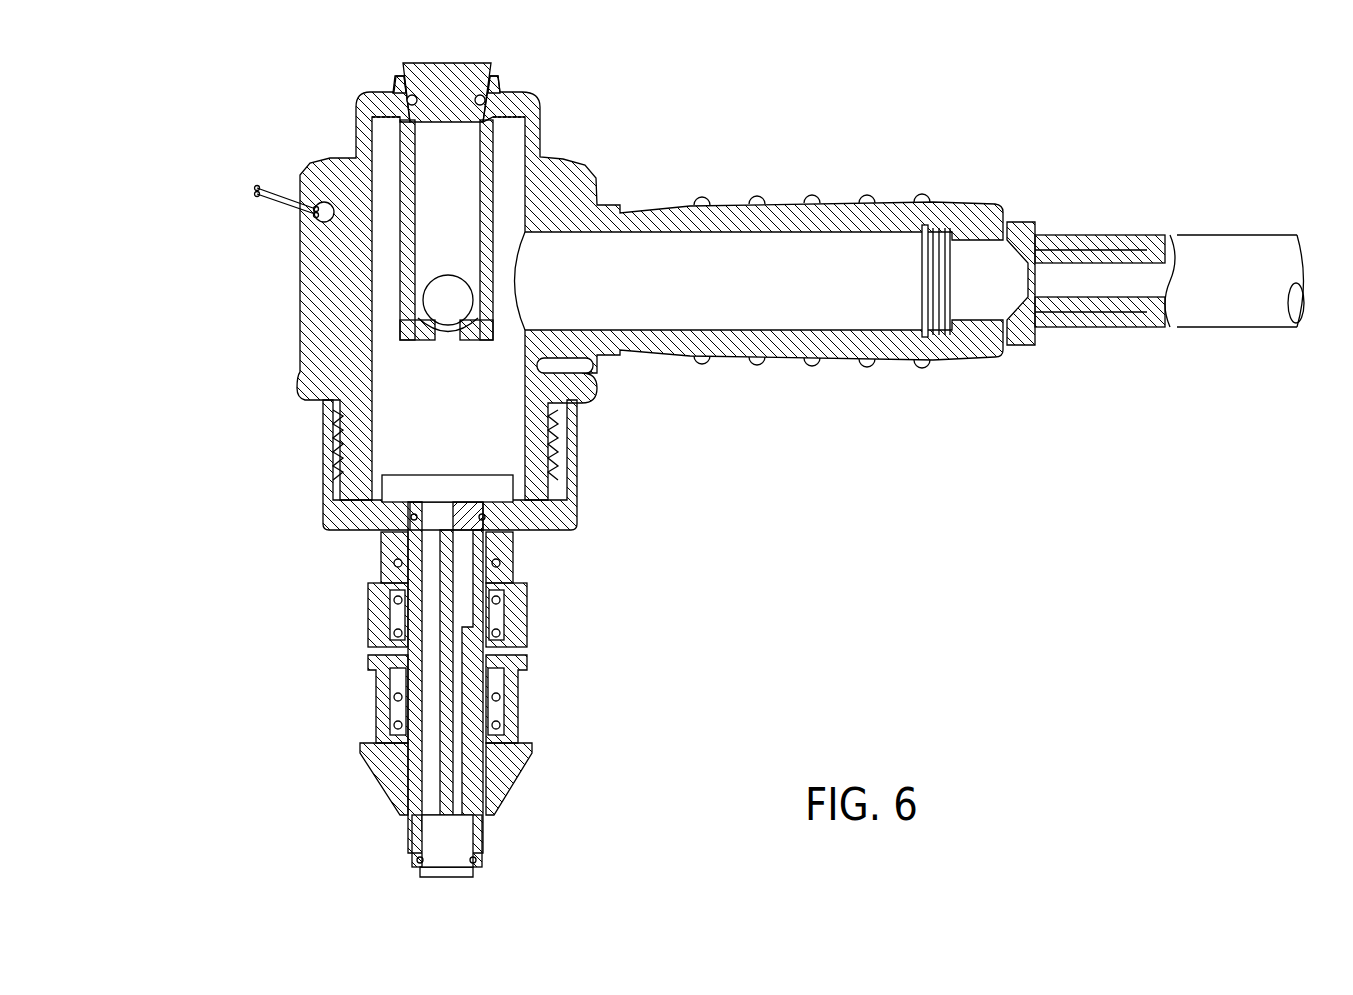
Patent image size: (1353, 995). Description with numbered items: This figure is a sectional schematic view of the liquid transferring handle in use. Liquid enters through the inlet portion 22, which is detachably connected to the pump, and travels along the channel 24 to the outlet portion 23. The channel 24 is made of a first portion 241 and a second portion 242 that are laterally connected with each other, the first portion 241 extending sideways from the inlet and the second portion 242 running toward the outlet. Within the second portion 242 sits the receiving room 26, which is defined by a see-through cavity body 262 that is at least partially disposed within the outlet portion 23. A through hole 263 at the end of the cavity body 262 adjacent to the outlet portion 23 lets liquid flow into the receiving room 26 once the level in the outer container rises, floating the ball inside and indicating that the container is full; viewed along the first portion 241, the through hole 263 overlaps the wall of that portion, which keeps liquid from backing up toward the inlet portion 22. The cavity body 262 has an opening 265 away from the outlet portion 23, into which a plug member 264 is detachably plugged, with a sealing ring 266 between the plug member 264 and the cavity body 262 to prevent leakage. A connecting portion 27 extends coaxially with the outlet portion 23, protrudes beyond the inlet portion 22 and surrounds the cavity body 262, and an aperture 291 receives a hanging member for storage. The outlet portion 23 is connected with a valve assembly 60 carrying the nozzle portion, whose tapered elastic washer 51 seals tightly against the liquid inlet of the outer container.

The inlet portion 22 is at (849, 257).
The outlet portion 23 is at (397, 418).
The channel 24 is at (767, 390).
The first portion 241 is at (643, 300).
The second portion 242 is at (497, 362).
The receiving room 26 is at (460, 192).
The cavity body 262 is at (407, 170).
The through hole 263 is at (450, 333).
The plug member 264 is at (470, 72).
The opening 265 is at (487, 117).
The sealing ring 266 is at (410, 96).
The connecting portion 27 is at (508, 137).
The aperture 291 is at (322, 211).
The elastic washer 51 is at (502, 765).
The valve assembly 60 is at (300, 615).